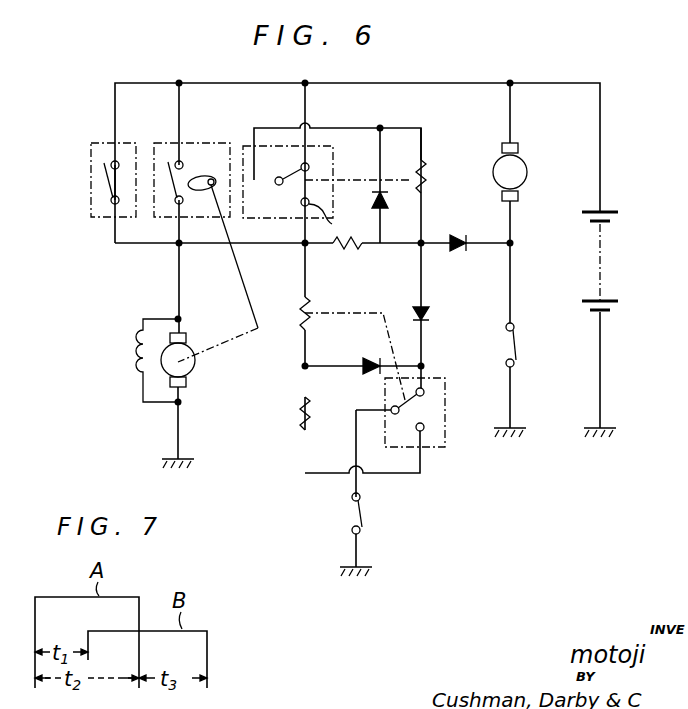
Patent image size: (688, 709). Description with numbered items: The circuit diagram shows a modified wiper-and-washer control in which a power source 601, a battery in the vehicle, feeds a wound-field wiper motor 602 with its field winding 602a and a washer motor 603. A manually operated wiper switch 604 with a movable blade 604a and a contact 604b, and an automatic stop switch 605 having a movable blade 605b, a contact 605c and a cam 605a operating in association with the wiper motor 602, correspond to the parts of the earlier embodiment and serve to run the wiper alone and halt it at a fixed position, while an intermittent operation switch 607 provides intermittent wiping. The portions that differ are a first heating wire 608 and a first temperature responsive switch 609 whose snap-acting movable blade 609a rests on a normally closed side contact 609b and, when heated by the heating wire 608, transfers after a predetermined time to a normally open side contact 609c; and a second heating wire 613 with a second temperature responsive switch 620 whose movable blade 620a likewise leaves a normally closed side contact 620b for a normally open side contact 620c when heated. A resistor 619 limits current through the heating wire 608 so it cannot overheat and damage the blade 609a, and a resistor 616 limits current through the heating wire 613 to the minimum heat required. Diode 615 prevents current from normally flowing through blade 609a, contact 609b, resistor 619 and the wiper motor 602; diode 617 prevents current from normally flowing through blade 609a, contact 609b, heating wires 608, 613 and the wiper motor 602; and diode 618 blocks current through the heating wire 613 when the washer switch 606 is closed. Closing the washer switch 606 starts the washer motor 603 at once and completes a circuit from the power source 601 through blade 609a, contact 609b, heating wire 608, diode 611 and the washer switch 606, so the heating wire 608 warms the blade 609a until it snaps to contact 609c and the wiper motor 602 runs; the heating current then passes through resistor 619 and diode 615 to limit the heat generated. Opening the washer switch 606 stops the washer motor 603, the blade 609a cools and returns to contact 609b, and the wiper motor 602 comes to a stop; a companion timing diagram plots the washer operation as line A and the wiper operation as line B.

The power source 601 is at (604, 233).
The wiper motor 602 is at (196, 362).
The motor field coil 602a is at (137, 363).
The washer motor 603 is at (528, 172).
The switch 604 is at (97, 165).
The switch contact 604a is at (104, 192).
The switch contact 604b is at (110, 157).
The switch 605 is at (203, 222).
The cam 605a is at (203, 176).
The switch contact 605b is at (169, 160).
The switch contact 605c is at (182, 161).
The washer switch 606 is at (519, 345).
The switch 607 is at (362, 507).
The first heating wire 608 is at (428, 172).
The first temperature responsive switch 609 is at (277, 144).
The temperature responsive movable blade 609a is at (309, 165).
The normally closed side contact 609b is at (279, 205).
The normally open side contact 609c is at (347, 221).
The diode 611 is at (457, 250).
The second heating wire 613 is at (310, 317).
The diode 615 is at (386, 212).
The resistor 616 is at (300, 410).
The diode 617 is at (358, 376).
The diode 618 is at (432, 312).
The resistor 619 is at (350, 252).
The second temperature responsive switch 620 is at (425, 367).
The temperature responsive movable blade 620a is at (416, 402).
The normally closed side contact 620b is at (428, 391).
The normally open side contact 620c is at (425, 428).